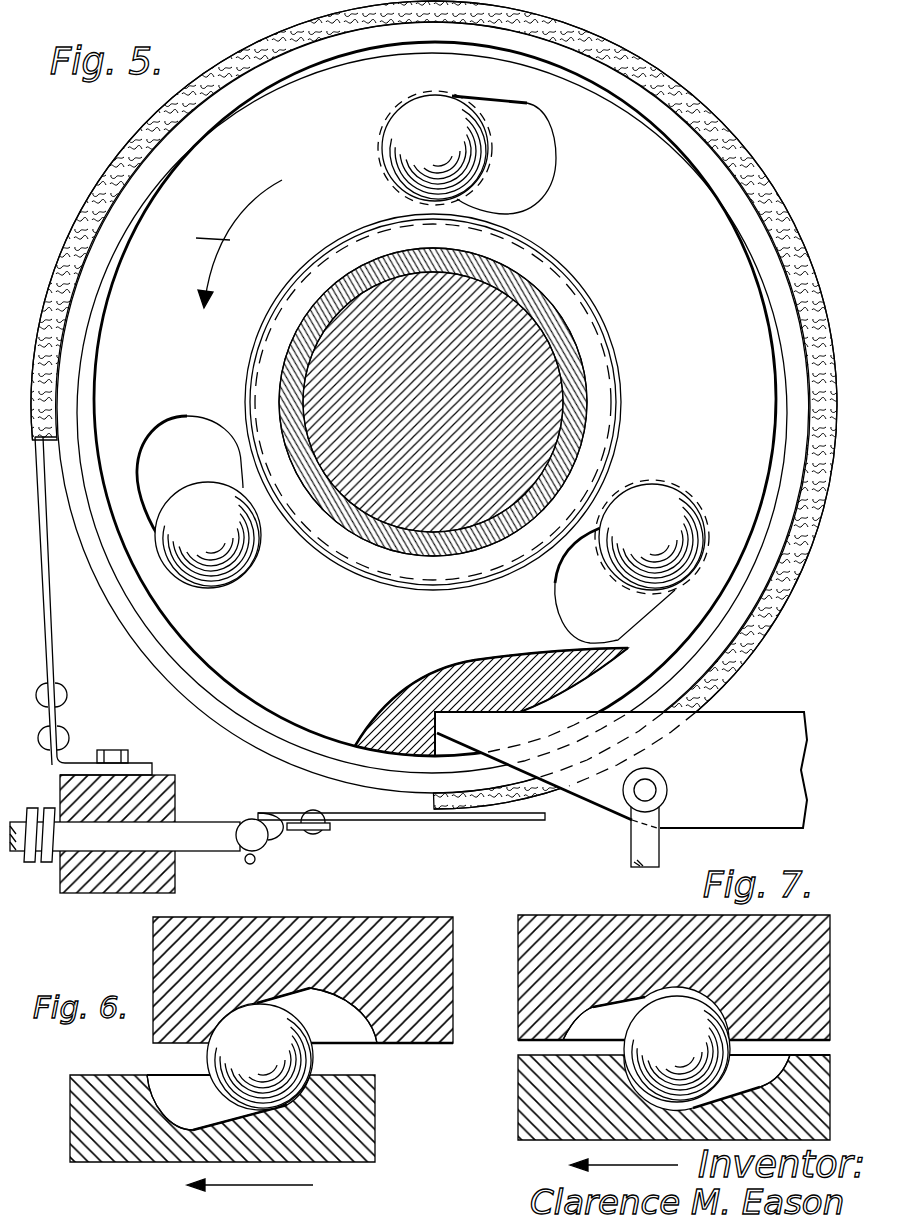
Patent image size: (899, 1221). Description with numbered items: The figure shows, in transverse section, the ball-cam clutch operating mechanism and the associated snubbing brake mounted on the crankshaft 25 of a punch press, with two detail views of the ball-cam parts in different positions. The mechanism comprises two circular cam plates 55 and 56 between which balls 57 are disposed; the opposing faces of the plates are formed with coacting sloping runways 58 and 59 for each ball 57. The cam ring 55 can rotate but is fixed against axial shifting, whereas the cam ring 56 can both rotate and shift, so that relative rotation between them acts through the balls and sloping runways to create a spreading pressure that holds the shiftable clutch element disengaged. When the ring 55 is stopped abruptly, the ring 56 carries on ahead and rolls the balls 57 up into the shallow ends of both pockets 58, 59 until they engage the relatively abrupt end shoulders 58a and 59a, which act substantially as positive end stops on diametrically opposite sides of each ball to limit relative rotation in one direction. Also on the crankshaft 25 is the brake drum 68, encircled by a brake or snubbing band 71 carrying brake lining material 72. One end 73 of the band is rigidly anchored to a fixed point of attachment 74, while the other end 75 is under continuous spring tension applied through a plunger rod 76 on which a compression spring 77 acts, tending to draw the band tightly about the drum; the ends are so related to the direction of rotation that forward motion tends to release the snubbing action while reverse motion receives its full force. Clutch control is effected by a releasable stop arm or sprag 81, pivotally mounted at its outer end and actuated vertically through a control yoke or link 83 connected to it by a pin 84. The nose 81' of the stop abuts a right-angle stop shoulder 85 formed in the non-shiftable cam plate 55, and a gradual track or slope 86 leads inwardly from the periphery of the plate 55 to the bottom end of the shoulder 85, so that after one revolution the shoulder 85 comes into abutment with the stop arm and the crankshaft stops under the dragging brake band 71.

In FIG. 5, the crankshaft 25 is at (540, 378).
In FIG. 5, the cam plate 55 is at (660, 190).
In FIG. 6, the cam plate 55 is at (153, 952).
In FIG. 7, the cam plate 55 is at (518, 950).
In FIG. 6, the cam plate 56 is at (75, 1150).
In FIG. 7, the cam plate 56 is at (525, 1135).
In FIG. 5, the balls 57 is at (390, 136).
In FIG. 6, the balls 57 is at (260, 1057).
In FIG. 7, the balls 57 is at (677, 1049).
In FIG. 5, the runway 58 is at (528, 168).
In FIG. 6, the runway 58 is at (343, 1015).
In FIG. 7, the end shoulder 58a is at (590, 1023).
In FIG. 6, the runway 59 is at (172, 1102).
In FIG. 7, the end shoulder 59a is at (762, 1071).
In FIG. 5, the brake drum 68 is at (298, 68).
In FIG. 5, the brake band 71 is at (110, 151).
In FIG. 5, the brake lining material 72 is at (773, 598).
In FIG. 5, the end of brake band 73 is at (55, 670).
In FIG. 5, the fixed point of attachment 74 is at (138, 787).
In FIG. 5, the end of brake band 75 is at (392, 820).
In FIG. 5, the plunger rod 76 is at (212, 840).
In FIG. 5, the compression spring 77 is at (25, 857).
In FIG. 5, the stop arm 81 is at (625, 746).
In FIG. 5, the nose 81' is at (503, 741).
In FIG. 5, the control yoke 83 is at (632, 860).
In FIG. 5, the pin 84 is at (647, 790).
In FIG. 5, the stop shoulder 85 is at (442, 740).
In FIG. 5, the track or slope 86 is at (620, 667).